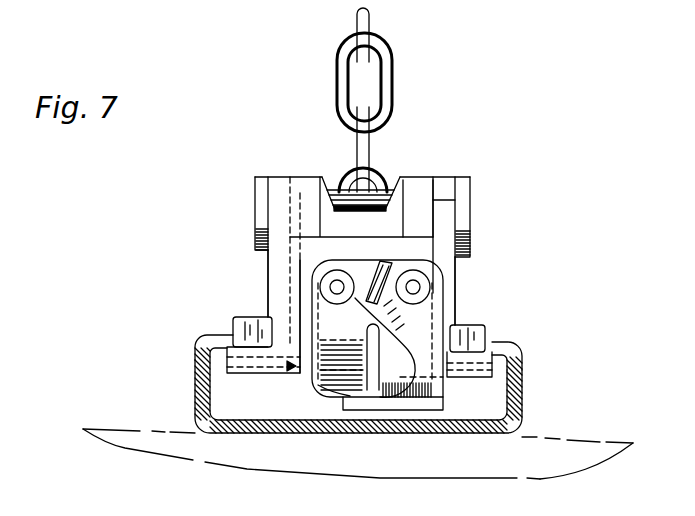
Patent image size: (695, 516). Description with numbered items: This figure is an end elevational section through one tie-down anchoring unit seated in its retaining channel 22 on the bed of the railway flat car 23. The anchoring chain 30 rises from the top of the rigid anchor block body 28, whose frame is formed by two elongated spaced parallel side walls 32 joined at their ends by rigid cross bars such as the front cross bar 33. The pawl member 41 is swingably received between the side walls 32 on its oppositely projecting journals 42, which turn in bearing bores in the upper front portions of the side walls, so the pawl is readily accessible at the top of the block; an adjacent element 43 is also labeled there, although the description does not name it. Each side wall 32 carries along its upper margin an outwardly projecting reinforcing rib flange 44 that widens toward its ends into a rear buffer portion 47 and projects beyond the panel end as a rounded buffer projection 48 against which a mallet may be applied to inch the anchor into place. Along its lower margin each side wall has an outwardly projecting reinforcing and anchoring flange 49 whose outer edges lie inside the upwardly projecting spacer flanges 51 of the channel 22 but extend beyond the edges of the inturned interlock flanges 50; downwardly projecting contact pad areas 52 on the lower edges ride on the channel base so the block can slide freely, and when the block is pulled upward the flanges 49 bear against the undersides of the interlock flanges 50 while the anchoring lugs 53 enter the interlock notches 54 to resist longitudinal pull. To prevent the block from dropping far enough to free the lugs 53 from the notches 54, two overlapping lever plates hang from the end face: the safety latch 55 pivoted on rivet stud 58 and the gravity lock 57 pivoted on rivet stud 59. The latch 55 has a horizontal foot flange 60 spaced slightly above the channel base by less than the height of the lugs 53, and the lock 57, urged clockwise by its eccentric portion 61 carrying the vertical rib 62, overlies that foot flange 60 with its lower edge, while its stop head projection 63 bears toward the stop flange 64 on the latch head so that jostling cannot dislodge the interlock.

The retaining channel 22 is at (518, 435).
The railway flat car 23 is at (587, 448).
The anchor block body 28 is at (266, 172).
The anchoring chain 30 is at (392, 84).
The side wall 32 is at (272, 268).
The front cross bar 33 is at (298, 283).
The pawl member 41 is at (390, 184).
The journals 42 is at (268, 190).
The threaded portion 43 is at (268, 215).
The upper reinforcing rib flange 44 is at (273, 177).
The rear buffer portion 47 is at (470, 238).
The buffer projection 48 is at (470, 207).
The lower reinforcing and anchoring flange 49 is at (197, 357).
The interlock flange 50 is at (233, 334).
The spacer flange 51 is at (195, 393).
The contact pad area 52 is at (252, 373).
The anchoring lug 53 is at (238, 317).
The interlock notch 54 is at (495, 341).
The safety latch 55 is at (425, 400).
The gravity lock 57 is at (333, 368).
The rivet stud 58 is at (417, 278).
The rivet stud 59 is at (333, 282).
The foot flange 60 is at (387, 402).
The eccentric portion 61 is at (335, 380).
The rib 62 is at (370, 343).
The stop head projection 63 is at (370, 272).
The stop flange 64 is at (413, 280).